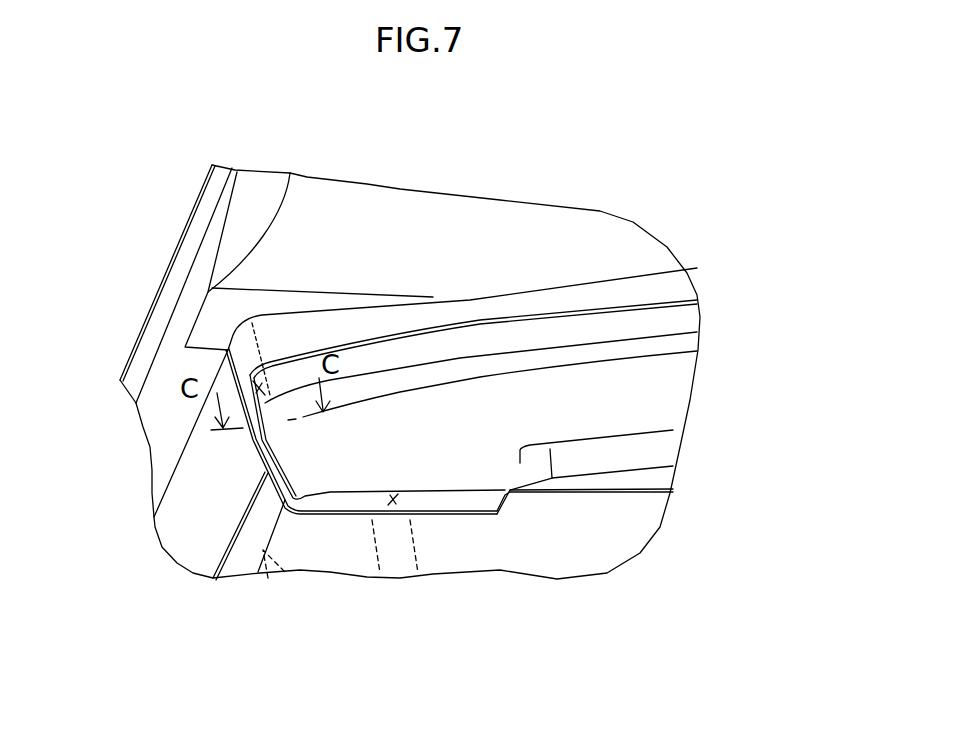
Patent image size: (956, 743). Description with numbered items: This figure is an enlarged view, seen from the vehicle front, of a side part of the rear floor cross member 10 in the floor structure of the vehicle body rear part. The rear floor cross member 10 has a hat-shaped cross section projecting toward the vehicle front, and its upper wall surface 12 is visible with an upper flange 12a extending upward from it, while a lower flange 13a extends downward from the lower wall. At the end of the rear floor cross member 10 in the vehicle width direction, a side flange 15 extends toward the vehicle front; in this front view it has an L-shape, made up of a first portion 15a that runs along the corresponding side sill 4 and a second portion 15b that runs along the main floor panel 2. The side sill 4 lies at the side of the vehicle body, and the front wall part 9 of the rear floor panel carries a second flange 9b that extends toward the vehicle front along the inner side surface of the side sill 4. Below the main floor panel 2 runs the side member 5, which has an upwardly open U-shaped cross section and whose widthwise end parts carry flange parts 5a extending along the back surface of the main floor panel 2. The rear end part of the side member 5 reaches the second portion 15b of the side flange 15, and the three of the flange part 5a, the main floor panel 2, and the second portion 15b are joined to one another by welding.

The main floor panel 2 is at (615, 540).
The side sill 4 is at (160, 403).
The side member 5 is at (373, 592).
The flange part 5a is at (268, 578).
The front wall part 9 is at (640, 288).
The second flange 9b is at (243, 351).
The rear floor cross member 10 is at (690, 393).
The upper wall surface 12 is at (687, 342).
The upper flange 12a is at (481, 341).
The lower flange 13a is at (660, 448).
The side flange 15 is at (320, 503).
The first portion 15a is at (268, 412).
The second portion 15b is at (463, 500).